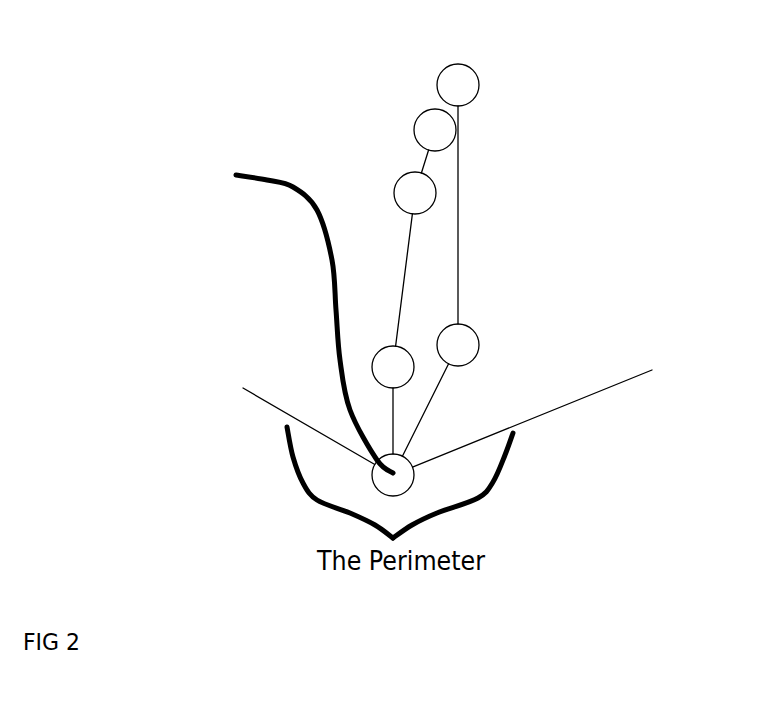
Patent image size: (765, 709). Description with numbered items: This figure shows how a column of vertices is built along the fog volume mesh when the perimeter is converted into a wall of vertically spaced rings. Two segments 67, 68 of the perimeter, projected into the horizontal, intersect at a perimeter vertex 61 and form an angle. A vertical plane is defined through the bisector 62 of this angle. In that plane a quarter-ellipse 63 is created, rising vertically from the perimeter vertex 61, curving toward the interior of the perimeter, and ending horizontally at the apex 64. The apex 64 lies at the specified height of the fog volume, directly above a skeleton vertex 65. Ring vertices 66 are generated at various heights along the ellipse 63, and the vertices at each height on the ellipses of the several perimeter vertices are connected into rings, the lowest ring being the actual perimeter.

The perimeter vertex 61 is at (393, 366).
The bisector 62 is at (435, 402).
The quarter-ellipse 63 is at (412, 257).
The apex 64 is at (466, 92).
The skeleton vertex 65 is at (455, 347).
The ring vertices 66 is at (452, 89).
The perimeter segment 67 is at (262, 402).
The perimeter segment 68 is at (600, 396).